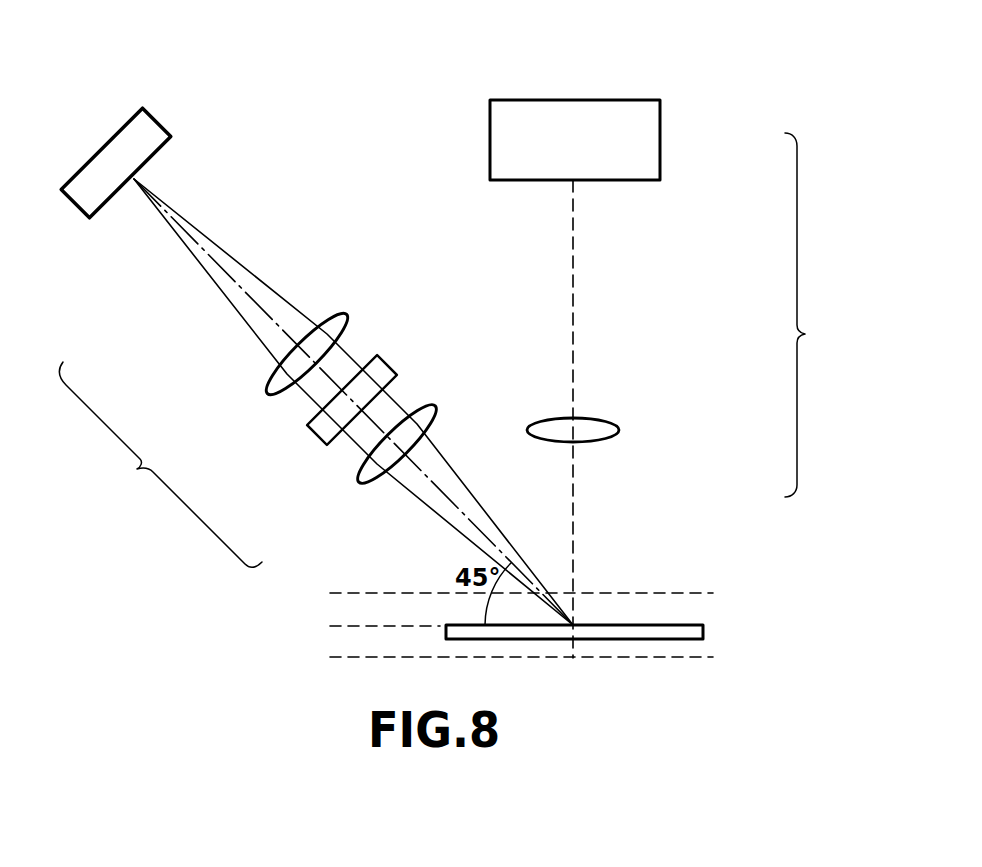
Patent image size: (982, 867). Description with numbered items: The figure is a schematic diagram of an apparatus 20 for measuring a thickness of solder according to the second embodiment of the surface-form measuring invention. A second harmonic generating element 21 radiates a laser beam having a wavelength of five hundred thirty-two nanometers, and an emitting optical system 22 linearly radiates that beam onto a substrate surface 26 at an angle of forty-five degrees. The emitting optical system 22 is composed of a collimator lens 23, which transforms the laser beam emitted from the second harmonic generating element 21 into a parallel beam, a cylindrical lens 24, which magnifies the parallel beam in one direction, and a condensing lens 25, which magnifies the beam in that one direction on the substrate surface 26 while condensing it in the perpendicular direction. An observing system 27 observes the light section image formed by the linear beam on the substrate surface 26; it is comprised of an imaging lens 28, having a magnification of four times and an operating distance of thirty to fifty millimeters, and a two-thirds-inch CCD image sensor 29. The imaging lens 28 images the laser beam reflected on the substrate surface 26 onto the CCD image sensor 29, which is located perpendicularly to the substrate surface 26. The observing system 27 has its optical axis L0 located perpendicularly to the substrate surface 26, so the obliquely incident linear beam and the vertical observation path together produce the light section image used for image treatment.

The apparatus for measuring a thickness of solder 20 is at (375, 112).
The second harmonic generating element 21 is at (162, 124).
The emitting optical system 22 is at (160, 464).
The collimator lens 23 is at (268, 381).
The cylindrical lens 24 is at (307, 433).
The condensing lens 25 is at (358, 486).
The substrate surface 26 is at (703, 630).
The observing system 27 is at (817, 315).
The imaging lens 28 is at (620, 427).
The CCD image sensor 29 is at (660, 140).
The optical axis L0 is at (573, 297).